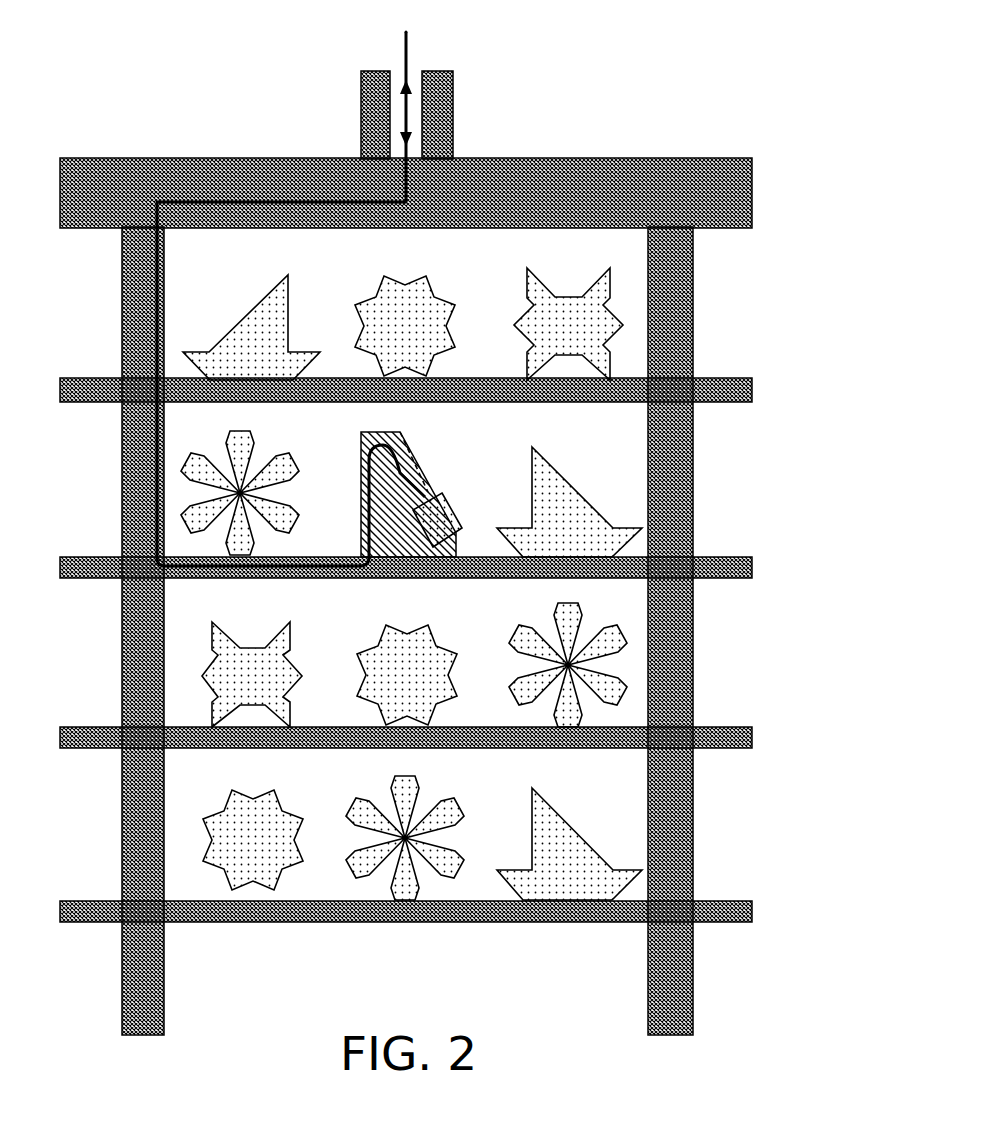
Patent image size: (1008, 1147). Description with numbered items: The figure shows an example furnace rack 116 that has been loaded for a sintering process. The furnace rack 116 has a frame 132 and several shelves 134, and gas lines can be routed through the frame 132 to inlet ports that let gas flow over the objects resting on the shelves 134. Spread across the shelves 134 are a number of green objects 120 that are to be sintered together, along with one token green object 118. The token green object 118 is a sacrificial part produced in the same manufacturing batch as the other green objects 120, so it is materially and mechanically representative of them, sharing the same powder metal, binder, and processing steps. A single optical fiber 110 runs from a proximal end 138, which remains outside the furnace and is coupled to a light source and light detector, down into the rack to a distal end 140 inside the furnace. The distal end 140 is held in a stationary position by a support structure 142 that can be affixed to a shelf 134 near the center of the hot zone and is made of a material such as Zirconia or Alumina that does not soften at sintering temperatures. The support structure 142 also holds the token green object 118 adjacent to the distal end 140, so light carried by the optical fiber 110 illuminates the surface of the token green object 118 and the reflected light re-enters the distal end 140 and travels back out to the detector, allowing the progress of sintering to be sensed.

The optical fiber 110 is at (403, 63).
The furnace rack 116 is at (596, 124).
The token green object 118 is at (456, 520).
The green objects 120 is at (286, 277).
The frame 132 is at (258, 158).
The shelves 134 is at (704, 580).
The proximal end 138 is at (416, 27).
The distal end 140 is at (430, 462).
The support structure 142 is at (366, 432).